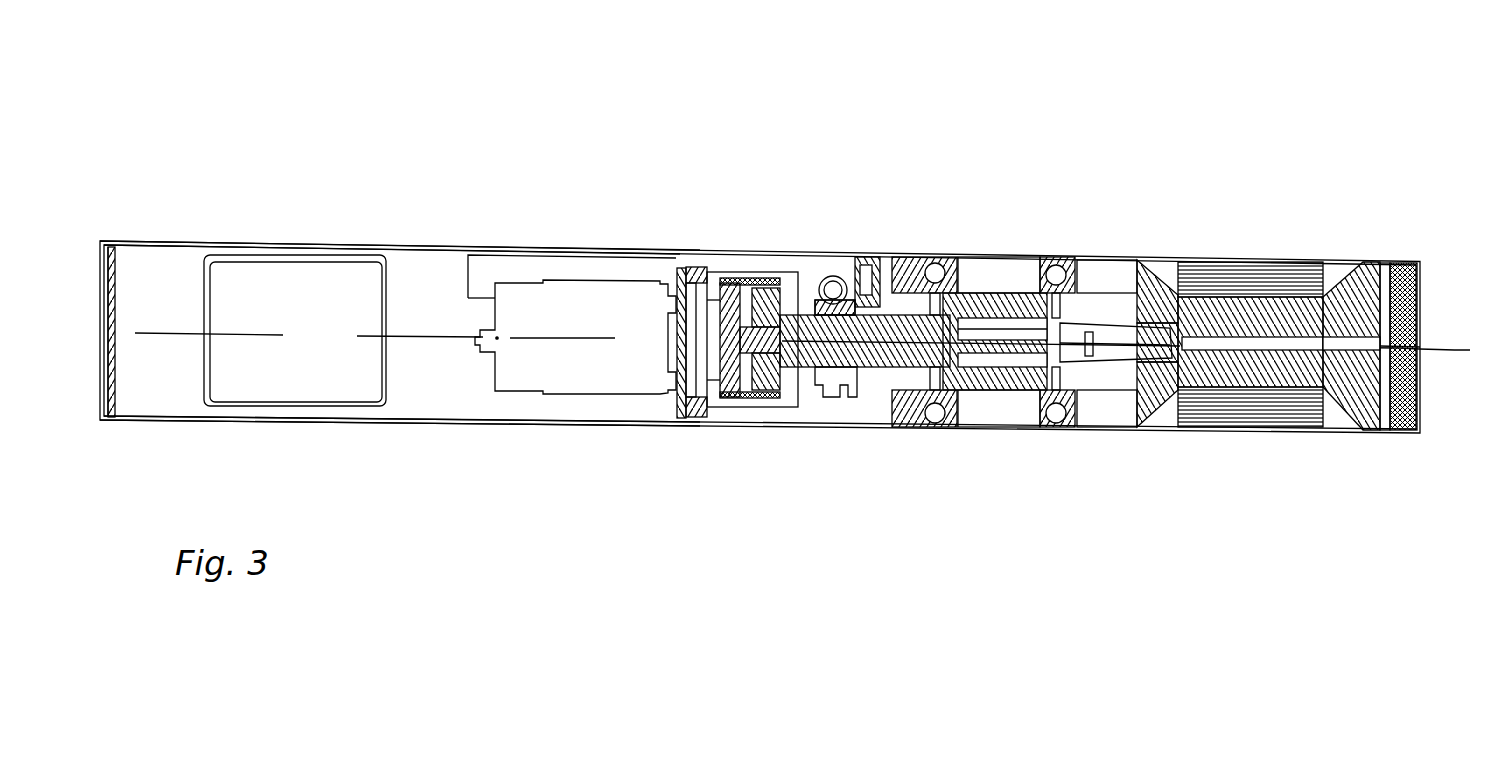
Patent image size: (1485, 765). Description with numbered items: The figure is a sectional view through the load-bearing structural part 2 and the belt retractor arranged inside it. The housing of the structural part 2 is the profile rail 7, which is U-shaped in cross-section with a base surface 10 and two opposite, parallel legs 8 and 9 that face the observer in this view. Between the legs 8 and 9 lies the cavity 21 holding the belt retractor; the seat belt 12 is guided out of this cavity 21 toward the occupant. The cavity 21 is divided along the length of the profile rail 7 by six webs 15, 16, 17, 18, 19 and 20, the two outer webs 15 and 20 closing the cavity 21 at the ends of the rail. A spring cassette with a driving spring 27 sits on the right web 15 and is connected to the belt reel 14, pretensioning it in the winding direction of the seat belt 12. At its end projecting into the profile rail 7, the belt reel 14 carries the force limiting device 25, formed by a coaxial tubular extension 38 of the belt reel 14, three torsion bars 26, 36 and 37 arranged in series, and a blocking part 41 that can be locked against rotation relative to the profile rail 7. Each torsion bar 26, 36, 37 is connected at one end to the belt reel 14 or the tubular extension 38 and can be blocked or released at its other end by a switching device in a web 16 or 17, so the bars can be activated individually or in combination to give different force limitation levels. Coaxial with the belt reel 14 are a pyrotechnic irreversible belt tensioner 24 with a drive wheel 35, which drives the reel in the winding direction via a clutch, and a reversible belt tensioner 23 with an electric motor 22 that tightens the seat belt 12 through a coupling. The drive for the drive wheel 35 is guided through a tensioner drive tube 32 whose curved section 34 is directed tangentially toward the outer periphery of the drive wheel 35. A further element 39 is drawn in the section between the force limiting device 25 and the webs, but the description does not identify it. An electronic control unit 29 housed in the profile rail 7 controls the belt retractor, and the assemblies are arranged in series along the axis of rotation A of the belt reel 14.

The load-bearing structural part 2 is at (599, 222).
The profile rail 7 is at (381, 246).
The leg 8 is at (437, 246).
The leg 9 is at (446, 423).
The base surface 10 is at (415, 310).
The seat belt 12 is at (1210, 266).
The belt reel 14 is at (1275, 318).
The web 15 is at (1372, 412).
The web 16 is at (1058, 257).
The web 17 is at (935, 257).
The web 18 is at (868, 257).
The web 19 is at (688, 262).
The web 20 is at (113, 265).
The cavity 21 is at (603, 403).
The electric motor 22 is at (563, 312).
The reversible belt tensioner 23 is at (629, 272).
The pyrotechnic belt tensioner 24 is at (838, 283).
The force limiting device 25 is at (994, 283).
The torsion bar 26 is at (1120, 357).
The driving spring 27 is at (1414, 268).
The electronic control unit 29 is at (289, 370).
The tensioner drive tube 32 is at (826, 315).
The curved section 34 is at (826, 315).
The drive wheel 35 is at (846, 385).
The torsion bar 36 is at (993, 340).
The torsion bar 37 is at (885, 345).
The tubular extension 38 is at (1093, 377).
The spring 39 is at (1082, 357).
The blocking part 41 is at (800, 343).
The axis A is at (1243, 347).